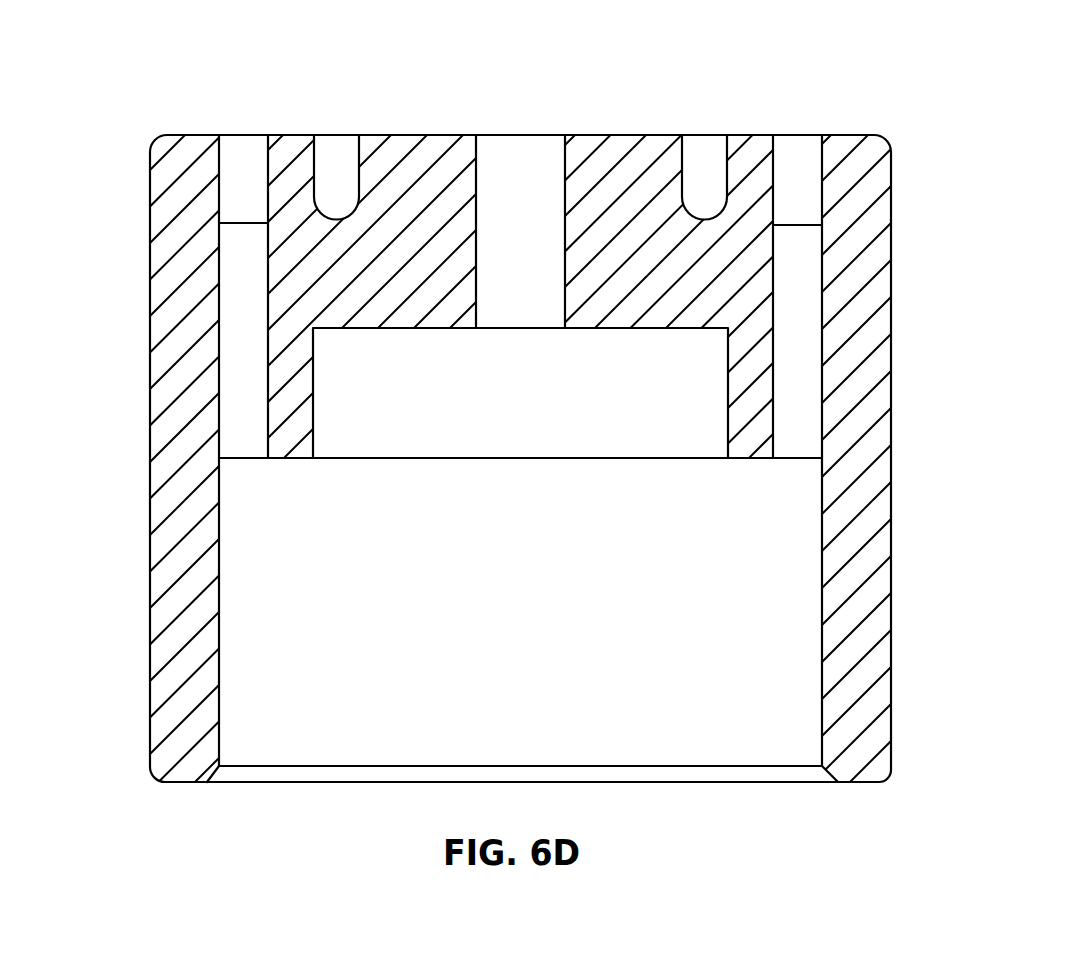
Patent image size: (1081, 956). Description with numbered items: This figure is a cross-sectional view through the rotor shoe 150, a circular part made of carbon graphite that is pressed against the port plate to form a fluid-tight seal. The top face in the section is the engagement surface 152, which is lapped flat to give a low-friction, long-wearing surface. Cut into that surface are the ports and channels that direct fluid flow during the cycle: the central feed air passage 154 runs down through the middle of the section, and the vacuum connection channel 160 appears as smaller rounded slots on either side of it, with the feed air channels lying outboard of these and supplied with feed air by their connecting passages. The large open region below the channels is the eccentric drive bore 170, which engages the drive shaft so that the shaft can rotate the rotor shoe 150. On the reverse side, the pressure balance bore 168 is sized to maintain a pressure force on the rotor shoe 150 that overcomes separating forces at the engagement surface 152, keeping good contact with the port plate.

The rotor shoe 150 is at (958, 97).
The engagement surface 152 is at (600, 135).
The central feed air passage 154 is at (528, 165).
The vacuum connection channel 160 is at (345, 135).
The pressure balance bore 168 is at (220, 728).
The eccentric drive bore 170 is at (312, 398).